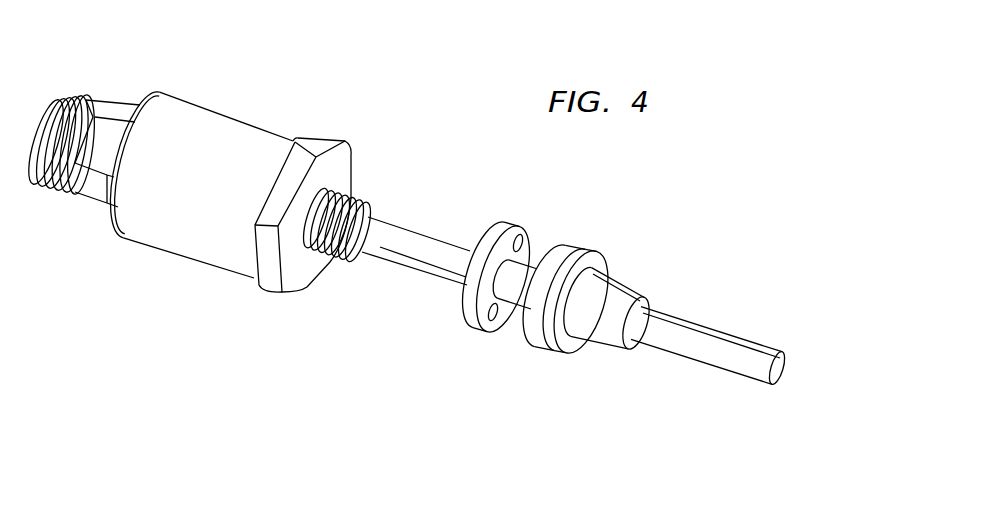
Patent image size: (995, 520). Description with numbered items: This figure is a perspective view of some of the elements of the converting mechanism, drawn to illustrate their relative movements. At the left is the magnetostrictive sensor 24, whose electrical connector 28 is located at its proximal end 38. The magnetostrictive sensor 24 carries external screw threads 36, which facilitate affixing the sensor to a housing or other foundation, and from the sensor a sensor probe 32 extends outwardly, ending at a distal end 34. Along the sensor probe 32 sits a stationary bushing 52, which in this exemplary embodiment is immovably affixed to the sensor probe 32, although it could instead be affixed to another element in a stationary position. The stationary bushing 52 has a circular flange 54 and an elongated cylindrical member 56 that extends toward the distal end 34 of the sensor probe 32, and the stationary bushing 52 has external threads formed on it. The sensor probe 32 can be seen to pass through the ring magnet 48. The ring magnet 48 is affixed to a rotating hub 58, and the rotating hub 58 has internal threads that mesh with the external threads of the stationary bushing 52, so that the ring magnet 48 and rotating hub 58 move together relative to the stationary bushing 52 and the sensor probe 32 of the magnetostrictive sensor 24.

The magnetostrictive sensor 24 is at (256, 111).
The electrical connector 28 is at (58, 188).
The sensor probe 32 is at (424, 256).
The distal end 34 is at (783, 352).
The external screw threads 36 is at (358, 208).
The proximal end 38 is at (118, 38).
The ring magnet 48 is at (587, 228).
The stationary bushing 52 is at (527, 217).
The circular flange 54 is at (503, 314).
The elongated cylindrical member 56 is at (650, 300).
The rotating hub 58 is at (560, 349).